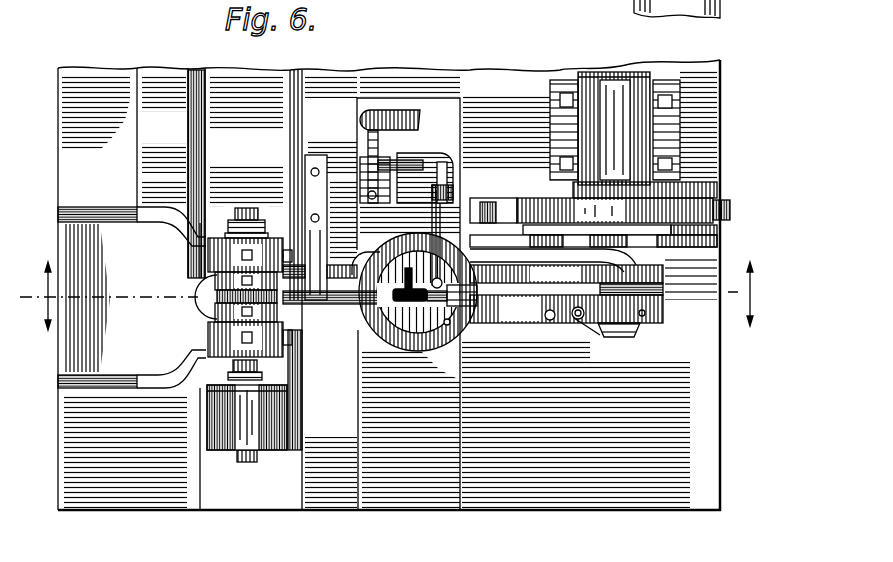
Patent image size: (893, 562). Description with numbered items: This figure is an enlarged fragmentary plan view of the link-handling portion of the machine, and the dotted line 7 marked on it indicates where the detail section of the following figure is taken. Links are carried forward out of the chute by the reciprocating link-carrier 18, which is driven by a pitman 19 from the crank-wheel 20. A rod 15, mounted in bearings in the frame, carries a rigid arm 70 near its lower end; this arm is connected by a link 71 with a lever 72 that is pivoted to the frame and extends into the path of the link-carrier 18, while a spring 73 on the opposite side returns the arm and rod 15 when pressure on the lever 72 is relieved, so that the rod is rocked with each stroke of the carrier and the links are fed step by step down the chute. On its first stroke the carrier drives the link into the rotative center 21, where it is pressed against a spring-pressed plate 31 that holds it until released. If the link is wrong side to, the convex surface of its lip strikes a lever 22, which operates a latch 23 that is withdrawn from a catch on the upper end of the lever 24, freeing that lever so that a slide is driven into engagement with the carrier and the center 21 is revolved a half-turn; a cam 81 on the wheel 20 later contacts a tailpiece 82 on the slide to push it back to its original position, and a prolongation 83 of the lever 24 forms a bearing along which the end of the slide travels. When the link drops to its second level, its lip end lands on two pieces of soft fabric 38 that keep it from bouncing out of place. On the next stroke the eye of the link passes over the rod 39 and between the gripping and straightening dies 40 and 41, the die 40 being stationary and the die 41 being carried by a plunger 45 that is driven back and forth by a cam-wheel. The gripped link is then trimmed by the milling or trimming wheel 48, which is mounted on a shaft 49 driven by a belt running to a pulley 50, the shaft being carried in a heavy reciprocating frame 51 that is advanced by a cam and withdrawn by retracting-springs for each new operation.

The dotted line 7 7 is at (395, 296).
The rod 15 is at (604, 336).
The link-carrier 18 is at (663, 290).
The pitman 19 is at (723, 233).
The crank-wheel 20 is at (660, 207).
The center 21 is at (410, 313).
The lever 22 is at (441, 232).
The latch 23 is at (425, 167).
The lever 24 is at (378, 142).
The spring-pressed plate 31 is at (417, 266).
The pieces of soft fabric 38 is at (442, 323).
The rod 39 is at (317, 304).
The gripping and straightening die 40 is at (227, 313).
The gripping and straightening die 41 is at (213, 277).
The plunger 45 is at (246, 101).
The milling or trimming wheel 48 is at (217, 297).
The shaft 49 is at (245, 207).
The pulley 50 is at (270, 452).
The reciprocating frame 51 is at (90, 352).
The rigid arm 70 is at (578, 320).
The link 71 is at (586, 332).
The lever 72 is at (637, 328).
The spring 73 is at (553, 320).
The cam 81 is at (730, 208).
The tailpiece 82 is at (490, 195).
The prolongation 83 is at (390, 118).